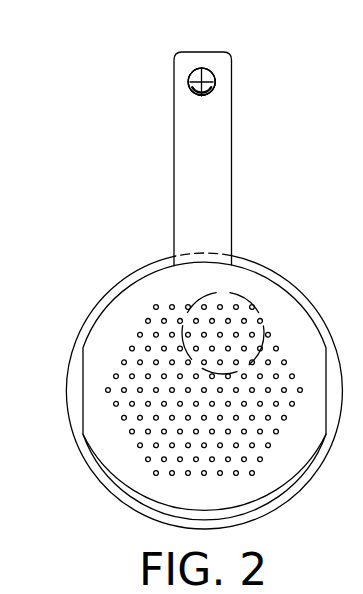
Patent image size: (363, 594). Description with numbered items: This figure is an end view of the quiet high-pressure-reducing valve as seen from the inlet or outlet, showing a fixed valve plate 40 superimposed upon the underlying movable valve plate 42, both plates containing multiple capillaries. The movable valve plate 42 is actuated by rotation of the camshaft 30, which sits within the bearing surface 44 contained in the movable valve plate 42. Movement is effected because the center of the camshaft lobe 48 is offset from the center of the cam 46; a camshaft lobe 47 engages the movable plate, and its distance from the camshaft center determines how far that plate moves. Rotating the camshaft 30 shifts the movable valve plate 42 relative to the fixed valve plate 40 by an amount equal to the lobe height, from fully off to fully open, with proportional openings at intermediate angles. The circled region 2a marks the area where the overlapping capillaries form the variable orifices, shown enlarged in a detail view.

The fixed valve plate 40 is at (189, 391).
The movable valve plate 42 is at (198, 220).
The bearing surface 44 is at (212, 97).
The cam 46 is at (212, 73).
The camshaft lobe 47 is at (202, 69).
The camshaft lobe 48 is at (188, 85).
The camshaft 30 is at (190, 93).
The detail view region 2a is at (243, 302).